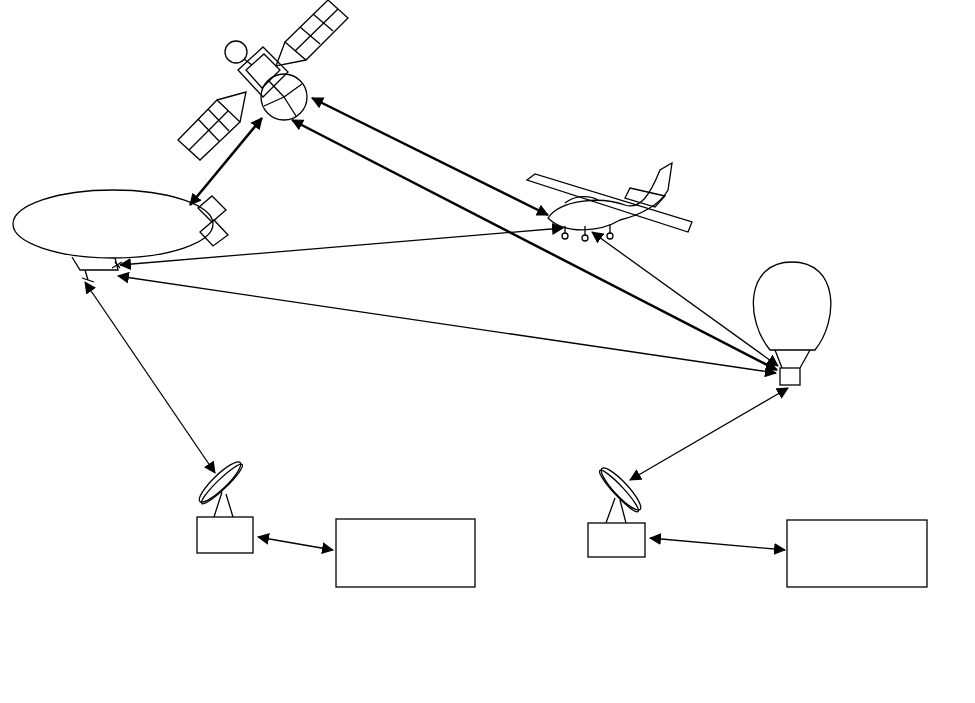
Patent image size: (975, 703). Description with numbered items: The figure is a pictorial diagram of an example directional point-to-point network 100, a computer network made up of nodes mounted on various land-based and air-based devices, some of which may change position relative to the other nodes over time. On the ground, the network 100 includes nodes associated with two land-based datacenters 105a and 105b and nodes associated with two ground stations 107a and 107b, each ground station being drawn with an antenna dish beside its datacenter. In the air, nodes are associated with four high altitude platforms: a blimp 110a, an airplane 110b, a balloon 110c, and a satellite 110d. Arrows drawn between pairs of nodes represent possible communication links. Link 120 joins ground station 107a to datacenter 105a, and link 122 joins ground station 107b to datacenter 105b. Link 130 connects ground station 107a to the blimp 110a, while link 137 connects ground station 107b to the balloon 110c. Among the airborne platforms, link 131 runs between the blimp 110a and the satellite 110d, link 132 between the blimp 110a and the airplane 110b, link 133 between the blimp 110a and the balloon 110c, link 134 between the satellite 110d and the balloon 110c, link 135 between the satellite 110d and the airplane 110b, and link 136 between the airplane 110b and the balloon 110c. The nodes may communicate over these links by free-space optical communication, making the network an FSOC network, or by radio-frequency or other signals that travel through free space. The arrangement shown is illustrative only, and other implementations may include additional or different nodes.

The directional point-to-point network 100 is at (92, 649).
The land-based datacenter 105a is at (405, 553).
The land-based datacenter 105b is at (857, 553).
The ground station 107a is at (224, 505).
The ground station 107b is at (616, 510).
The high altitude platform (blimp) 110a is at (105, 196).
The high altitude platform (airplane) 110b is at (580, 185).
The high altitude platform (balloon) 110c is at (800, 278).
The high altitude platform (satellite) 110d is at (224, 47).
The communication link 120 is at (295, 553).
The communication link 122 is at (717, 556).
The communication link 130 is at (150, 377).
The communication link 131 is at (226, 161).
The communication link 132 is at (341, 251).
The communication link 133 is at (447, 324).
The communication link 134 is at (534, 245).
The communication link 135 is at (430, 156).
The communication link 136 is at (685, 299).
The communication link 137 is at (709, 434).